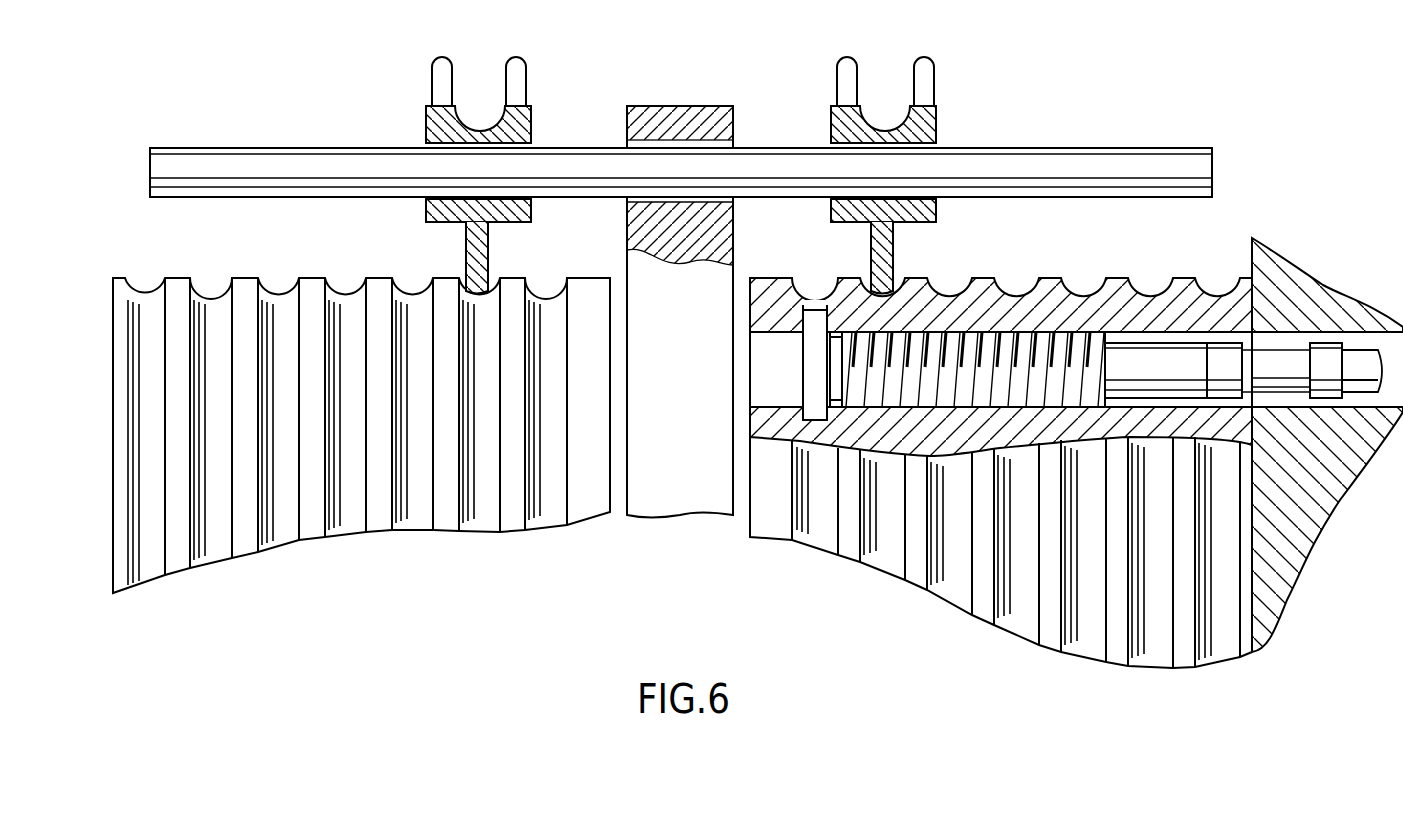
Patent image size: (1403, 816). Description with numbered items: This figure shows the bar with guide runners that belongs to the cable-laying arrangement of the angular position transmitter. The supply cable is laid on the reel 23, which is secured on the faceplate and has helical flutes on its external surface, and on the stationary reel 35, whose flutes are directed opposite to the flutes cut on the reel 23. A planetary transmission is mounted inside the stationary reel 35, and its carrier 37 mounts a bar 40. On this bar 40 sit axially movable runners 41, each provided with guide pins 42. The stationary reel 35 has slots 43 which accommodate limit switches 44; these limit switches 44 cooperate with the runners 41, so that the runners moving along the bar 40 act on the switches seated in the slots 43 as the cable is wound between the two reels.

The reel 23 is at (177, 293).
The stationary reel 35 is at (1155, 312).
The carrier 37 is at (672, 117).
The bar 40 is at (1022, 160).
The runners 41 is at (460, 162).
The guide pins 42 is at (517, 64).
The slots 43 is at (826, 378).
The limit switches 44 is at (987, 360).